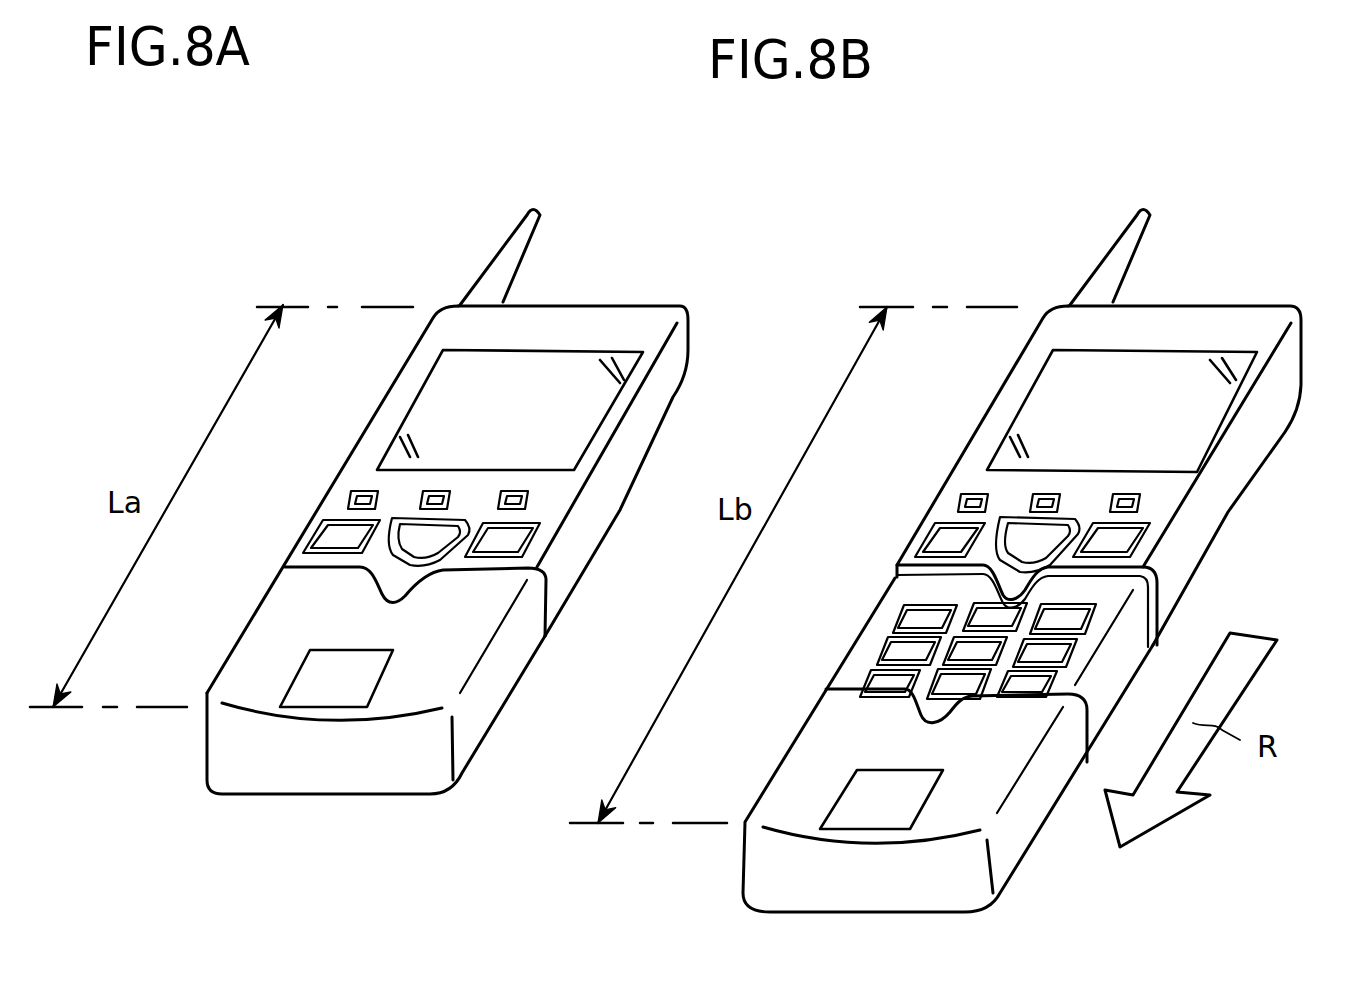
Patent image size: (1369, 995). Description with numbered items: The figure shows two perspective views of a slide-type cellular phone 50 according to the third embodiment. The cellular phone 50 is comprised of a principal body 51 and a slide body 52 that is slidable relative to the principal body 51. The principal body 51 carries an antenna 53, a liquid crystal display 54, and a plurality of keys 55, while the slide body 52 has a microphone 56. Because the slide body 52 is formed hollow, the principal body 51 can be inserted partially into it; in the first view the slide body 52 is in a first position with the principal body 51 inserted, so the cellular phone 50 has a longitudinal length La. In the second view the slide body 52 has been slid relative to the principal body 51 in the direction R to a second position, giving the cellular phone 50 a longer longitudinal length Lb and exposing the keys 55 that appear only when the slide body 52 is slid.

In FIG. 8A, the cellular phone 50 is at (317, 223).
In FIG. 8B, the cellular phone 50 is at (940, 225).
In FIG. 8A, the principal body 51 is at (385, 413).
In FIG. 8B, the principal body 51 is at (1000, 410).
In FIG. 8A, the slide body 52 is at (310, 620).
In FIG. 8B, the slide body 52 is at (845, 733).
In FIG. 8A, the antenna 53 is at (502, 278).
In FIG. 8B, the antenna 53 is at (1105, 273).
In FIG. 8A, the liquid crystal display 54 is at (580, 420).
In FIG. 8B, the liquid crystal display 54 is at (1157, 442).
In FIG. 8A, the keys 55 is at (332, 505).
In FIG. 8B, the keys 55 is at (893, 573).
In FIG. 8A, the microphone 56 is at (323, 690).
In FIG. 8B, the microphone 56 is at (857, 807).